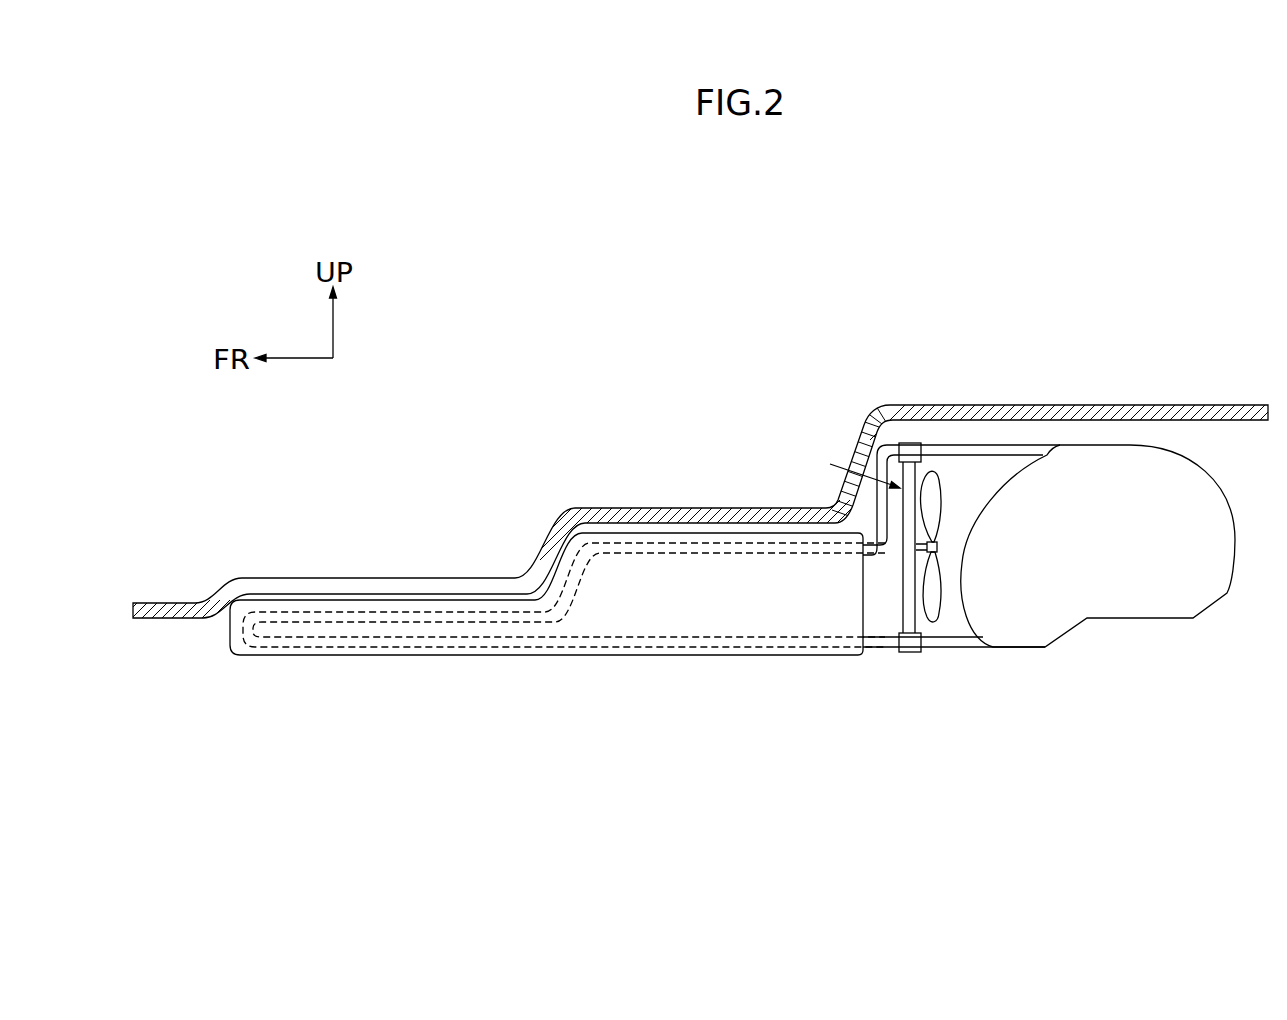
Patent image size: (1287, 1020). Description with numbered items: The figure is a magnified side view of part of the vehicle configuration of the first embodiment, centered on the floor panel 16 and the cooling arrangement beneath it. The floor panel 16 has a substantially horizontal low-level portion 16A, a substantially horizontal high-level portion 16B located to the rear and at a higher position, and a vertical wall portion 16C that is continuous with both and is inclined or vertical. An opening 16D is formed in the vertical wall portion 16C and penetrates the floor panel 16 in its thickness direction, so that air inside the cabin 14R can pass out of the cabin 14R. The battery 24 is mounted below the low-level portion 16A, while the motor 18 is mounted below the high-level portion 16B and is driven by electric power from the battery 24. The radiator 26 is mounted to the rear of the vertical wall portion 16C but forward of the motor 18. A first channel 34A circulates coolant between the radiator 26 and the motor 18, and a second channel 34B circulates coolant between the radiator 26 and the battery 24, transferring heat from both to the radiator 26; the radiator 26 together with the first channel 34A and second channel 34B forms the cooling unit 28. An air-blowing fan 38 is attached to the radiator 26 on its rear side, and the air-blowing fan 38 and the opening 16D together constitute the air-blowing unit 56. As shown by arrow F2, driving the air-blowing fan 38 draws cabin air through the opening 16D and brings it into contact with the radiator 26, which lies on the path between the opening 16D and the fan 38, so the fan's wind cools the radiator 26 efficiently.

The cabin 14R is at (603, 388).
The floor panel 16 is at (157, 620).
The low-level portion 16A is at (140, 499).
The high-level portion 16B is at (1268, 398).
The vertical wall portion 16C is at (858, 398).
The opening 16D is at (860, 440).
The air-blowing unit 56 is at (860, 501).
The motor 18 is at (1148, 635).
The battery 24 is at (295, 668).
The radiator 26 is at (917, 602).
The cooling unit 28 is at (917, 615).
The first channel 34A is at (967, 650).
The second channel 34B is at (880, 654).
The air-blowing fan 38 is at (942, 523).
The arrow F2 is at (834, 468).